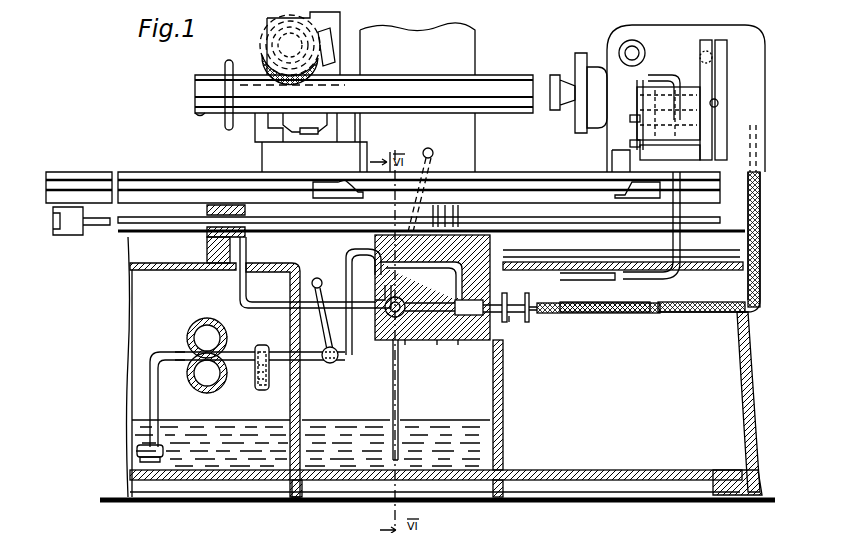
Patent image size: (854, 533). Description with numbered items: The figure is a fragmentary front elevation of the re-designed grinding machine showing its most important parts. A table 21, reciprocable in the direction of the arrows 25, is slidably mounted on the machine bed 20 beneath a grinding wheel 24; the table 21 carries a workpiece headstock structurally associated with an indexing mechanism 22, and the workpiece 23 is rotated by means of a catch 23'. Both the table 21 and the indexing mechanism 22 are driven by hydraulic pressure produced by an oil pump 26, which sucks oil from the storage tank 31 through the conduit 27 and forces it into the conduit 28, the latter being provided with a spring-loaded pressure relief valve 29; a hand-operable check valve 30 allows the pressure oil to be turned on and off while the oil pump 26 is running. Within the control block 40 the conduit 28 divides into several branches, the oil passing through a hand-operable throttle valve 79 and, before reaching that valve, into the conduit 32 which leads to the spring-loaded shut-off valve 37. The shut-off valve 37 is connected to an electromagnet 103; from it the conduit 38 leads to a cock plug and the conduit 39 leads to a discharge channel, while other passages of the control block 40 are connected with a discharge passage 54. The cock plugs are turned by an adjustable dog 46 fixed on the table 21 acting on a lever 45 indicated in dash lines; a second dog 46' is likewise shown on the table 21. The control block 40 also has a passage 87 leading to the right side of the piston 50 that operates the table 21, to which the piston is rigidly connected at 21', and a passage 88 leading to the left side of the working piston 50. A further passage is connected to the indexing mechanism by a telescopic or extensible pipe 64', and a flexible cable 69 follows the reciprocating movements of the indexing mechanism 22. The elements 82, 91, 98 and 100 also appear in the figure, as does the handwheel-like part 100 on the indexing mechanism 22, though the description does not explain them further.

The machine bed 20 is at (437, 367).
The table 21 is at (431, 192).
The rigid connection of table to piston 21' is at (72, 223).
The indexing mechanism 22 is at (707, 32).
The workpiece 23 is at (364, 84).
The catch 23' is at (578, 93).
The grinding wheel 24 is at (264, 62).
The arrows 25 is at (462, 132).
The oil pump 26 is at (190, 332).
The conduit 27 is at (150, 405).
The conduit 28 is at (347, 270).
The pressure relief valve 29 is at (257, 348).
The check valve 30 is at (335, 364).
The storage tank 31 is at (311, 443).
The conduit 32 is at (528, 303).
The shut-off valve 37 is at (469, 308).
The conduit 38 is at (437, 345).
The conduit 39 is at (405, 345).
The control block 40 is at (458, 345).
The lever 45 is at (433, 162).
The adjustable dog 46 is at (637, 190).
The table dog 46' is at (338, 189).
The piston 50 is at (468, 212).
The discharge passage 54 is at (398, 403).
The pipe 64' is at (634, 226).
The flexible cable 69 is at (760, 190).
The throttle valve 79 is at (385, 303).
The pipe 82 is at (628, 528).
The passage 87 is at (550, 258).
The passage 88 is at (245, 306).
The pipe 91 is at (650, 528).
The pipe 98 is at (630, 532).
The handwheel 100 is at (632, 40).
The electromagnet 103 is at (513, 320).